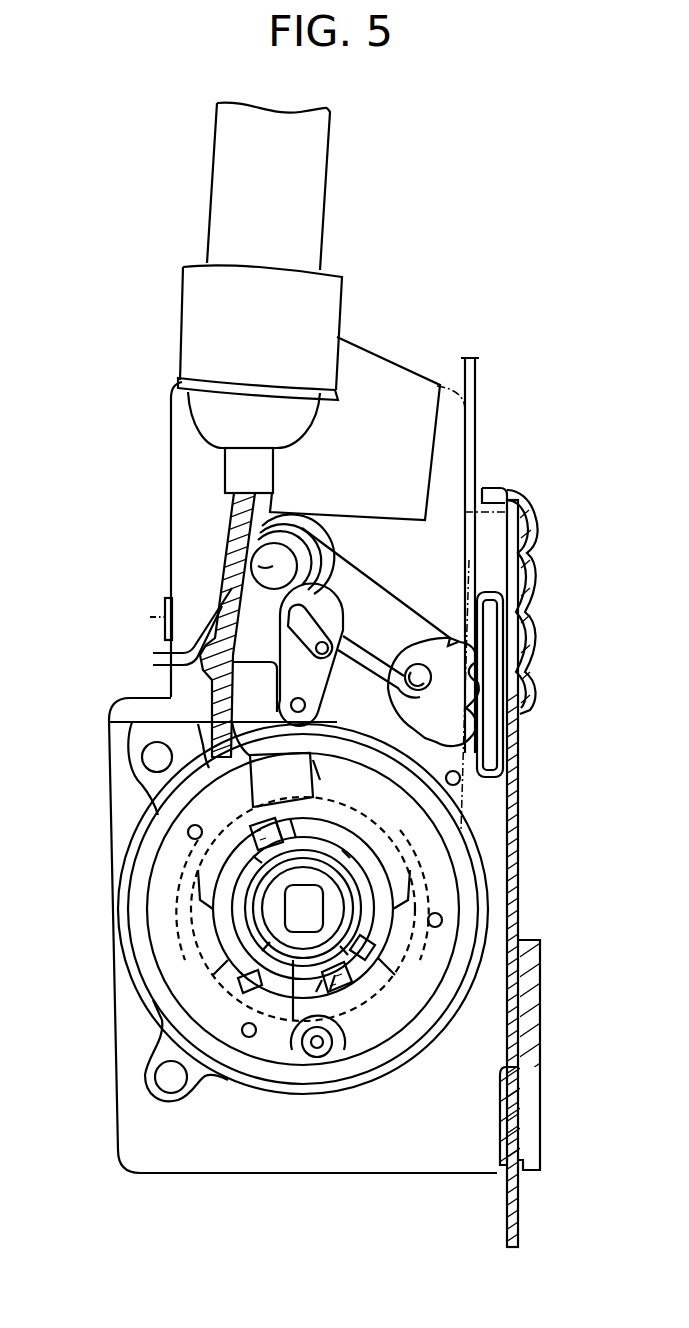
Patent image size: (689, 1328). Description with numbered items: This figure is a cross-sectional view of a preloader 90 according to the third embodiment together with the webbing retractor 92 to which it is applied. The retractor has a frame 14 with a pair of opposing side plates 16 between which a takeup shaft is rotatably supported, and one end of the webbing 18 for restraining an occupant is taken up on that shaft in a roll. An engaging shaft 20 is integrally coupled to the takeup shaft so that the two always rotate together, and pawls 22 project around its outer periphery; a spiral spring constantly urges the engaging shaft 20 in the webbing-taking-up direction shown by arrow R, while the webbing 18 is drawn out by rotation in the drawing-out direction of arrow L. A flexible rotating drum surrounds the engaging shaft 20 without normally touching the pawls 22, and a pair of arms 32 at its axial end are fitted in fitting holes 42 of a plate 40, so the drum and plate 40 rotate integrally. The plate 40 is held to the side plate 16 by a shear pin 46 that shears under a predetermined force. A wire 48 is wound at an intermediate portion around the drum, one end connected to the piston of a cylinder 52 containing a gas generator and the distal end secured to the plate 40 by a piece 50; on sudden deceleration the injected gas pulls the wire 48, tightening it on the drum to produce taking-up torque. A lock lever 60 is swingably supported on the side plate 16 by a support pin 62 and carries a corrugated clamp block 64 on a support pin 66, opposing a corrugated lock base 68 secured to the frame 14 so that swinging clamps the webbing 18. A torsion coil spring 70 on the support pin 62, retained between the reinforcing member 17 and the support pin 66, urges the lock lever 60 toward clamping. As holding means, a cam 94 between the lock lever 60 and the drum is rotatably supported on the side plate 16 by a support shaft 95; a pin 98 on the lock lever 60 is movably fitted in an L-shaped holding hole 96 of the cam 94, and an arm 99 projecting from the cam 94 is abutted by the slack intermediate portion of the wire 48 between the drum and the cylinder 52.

The frame 14 is at (522, 797).
The side plate 16 is at (110, 777).
The reinforcing member 17 is at (150, 614).
The webbing 18 is at (478, 370).
The engaging shaft 20 is at (293, 963).
The pawls 22 is at (360, 955).
The arms 32 is at (410, 883).
The plate 40 is at (372, 1052).
The fitting holes 42 is at (403, 860).
The shear pin 46 is at (317, 1045).
The wire 48 is at (200, 675).
The piece 50 is at (268, 752).
The cylinder 52 is at (183, 300).
The lock lever 60 is at (384, 604).
The support pin 62 is at (270, 565).
The clamp block 64 is at (470, 704).
The support pin 66 is at (430, 675).
The lock base 68 is at (473, 613).
The torsion coil spring 70 is at (381, 650).
The preloader 90 is at (97, 994).
The webbing retractor 92 is at (500, 455).
The cam 94 is at (340, 595).
The support shaft 95 is at (503, 755).
The holding hole 96 is at (300, 548).
The pin 98 is at (322, 640).
The arm 99 is at (234, 587).
The webbing-taking-up direction R is at (172, 844).
The drawing-out direction L is at (176, 905).